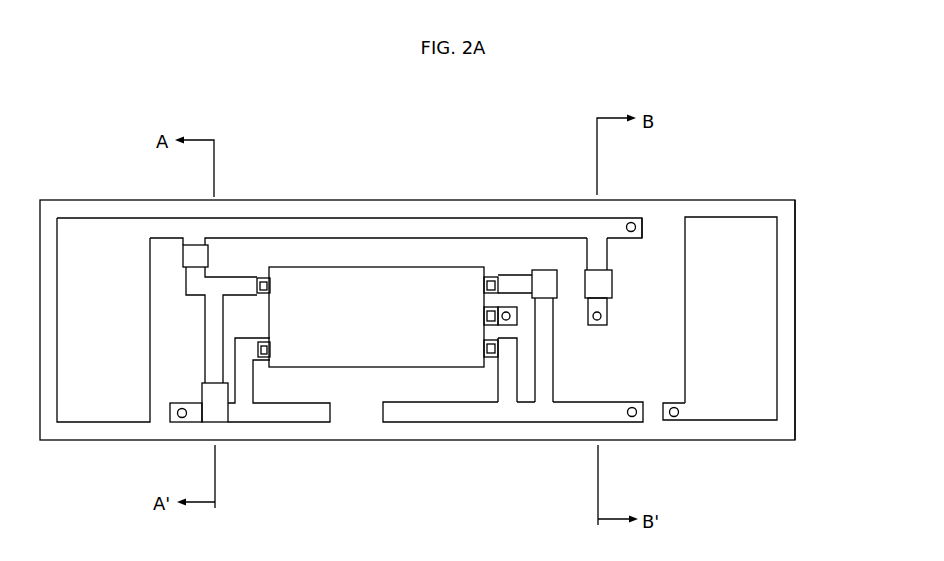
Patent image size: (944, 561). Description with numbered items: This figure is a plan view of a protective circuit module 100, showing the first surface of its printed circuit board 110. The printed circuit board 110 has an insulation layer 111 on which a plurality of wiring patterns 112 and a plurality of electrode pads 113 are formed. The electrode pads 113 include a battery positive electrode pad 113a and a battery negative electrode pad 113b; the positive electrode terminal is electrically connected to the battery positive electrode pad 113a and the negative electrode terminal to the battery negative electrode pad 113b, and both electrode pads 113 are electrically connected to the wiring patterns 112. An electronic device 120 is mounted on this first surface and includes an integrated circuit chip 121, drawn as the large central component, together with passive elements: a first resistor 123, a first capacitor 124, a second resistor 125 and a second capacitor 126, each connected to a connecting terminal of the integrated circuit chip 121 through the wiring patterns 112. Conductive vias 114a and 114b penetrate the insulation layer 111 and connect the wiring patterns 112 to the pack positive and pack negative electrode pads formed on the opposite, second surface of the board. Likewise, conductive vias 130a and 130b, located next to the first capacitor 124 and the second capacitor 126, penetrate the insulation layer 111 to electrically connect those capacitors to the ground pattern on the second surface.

The protective circuit module 100 is at (833, 158).
The printed circuit board 110 is at (748, 197).
The insulation layer 111 is at (795, 263).
The wiring patterns 112 is at (303, 218).
The electrode pads 113 is at (421, 354).
The battery positive electrode pad 113a is at (106, 423).
The battery negative electrode pad 113b is at (735, 421).
The conductive via 114a is at (638, 227).
The conductive via 114b is at (632, 420).
The electronic device 120 is at (358, 257).
The integrated circuit chip 121 is at (450, 275).
The first resistor 123 is at (183, 255).
The first capacitor 124 is at (219, 416).
The second resistor 125 is at (544, 280).
The second capacitor 126 is at (613, 283).
The conductive via 130a is at (182, 418).
The conductive via 130b is at (602, 316).